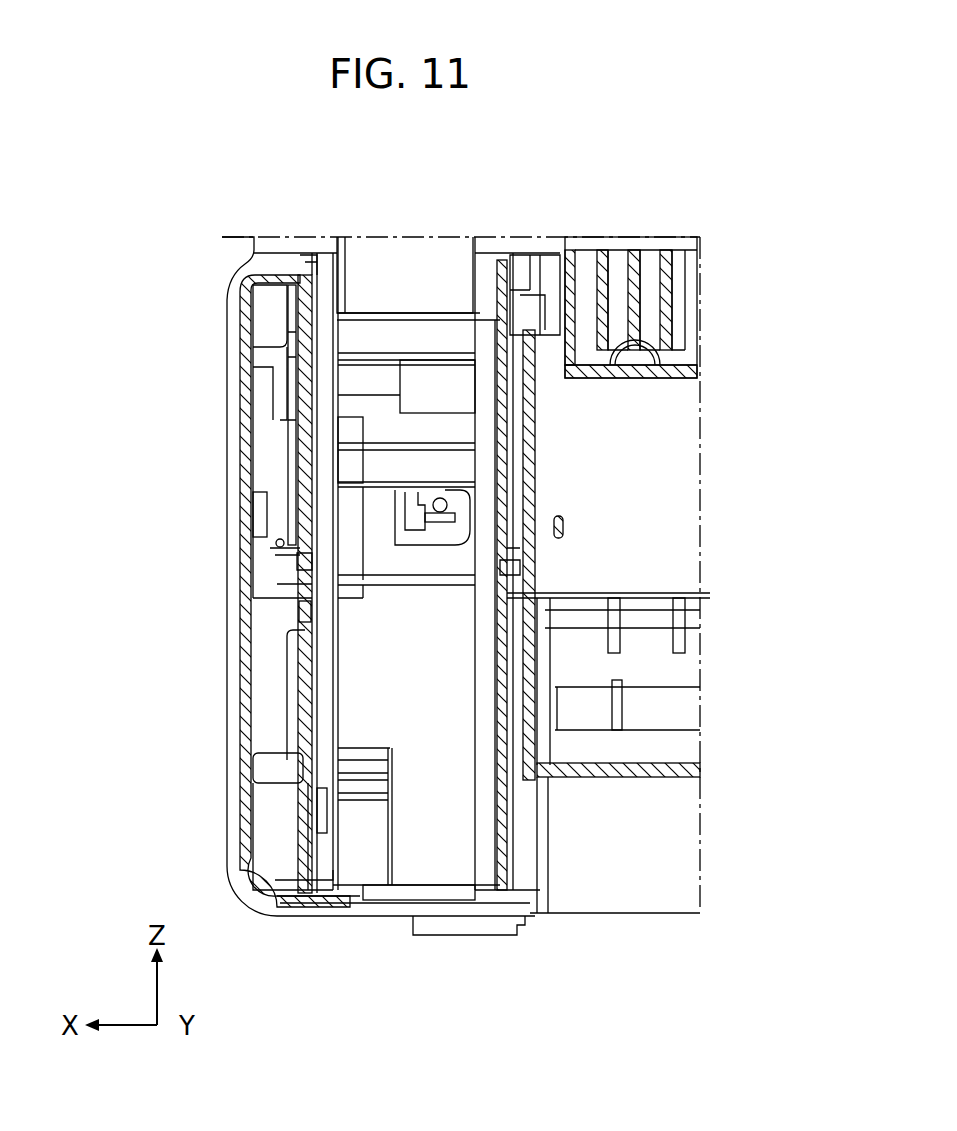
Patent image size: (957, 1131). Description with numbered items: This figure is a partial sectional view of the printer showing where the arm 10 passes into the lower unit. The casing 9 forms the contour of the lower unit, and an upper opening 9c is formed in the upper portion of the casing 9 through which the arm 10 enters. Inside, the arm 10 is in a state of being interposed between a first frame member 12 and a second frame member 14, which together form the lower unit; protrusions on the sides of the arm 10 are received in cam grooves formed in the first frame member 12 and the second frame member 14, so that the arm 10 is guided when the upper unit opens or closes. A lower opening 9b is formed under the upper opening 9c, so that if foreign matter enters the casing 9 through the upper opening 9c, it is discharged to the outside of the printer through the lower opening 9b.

The casing 9 is at (238, 433).
The lower opening 9b is at (393, 917).
The upper opening 9c is at (443, 276).
The arm 10 is at (404, 252).
The first frame member 12 is at (508, 557).
The second frame member 14 is at (300, 607).